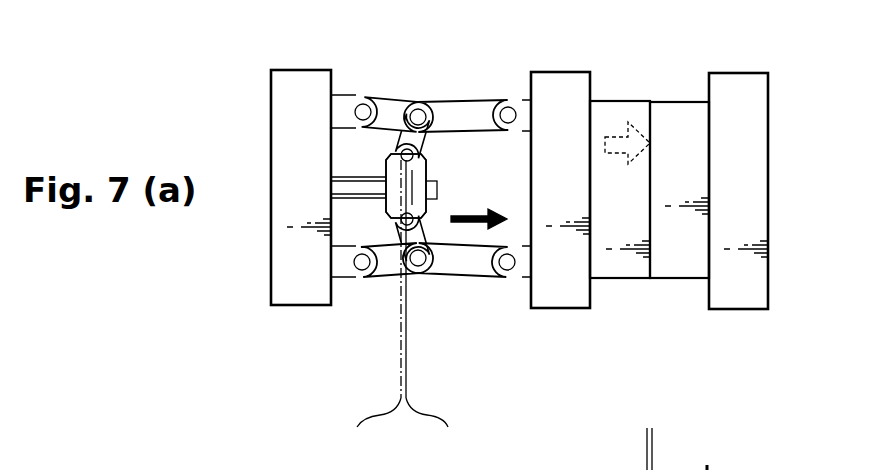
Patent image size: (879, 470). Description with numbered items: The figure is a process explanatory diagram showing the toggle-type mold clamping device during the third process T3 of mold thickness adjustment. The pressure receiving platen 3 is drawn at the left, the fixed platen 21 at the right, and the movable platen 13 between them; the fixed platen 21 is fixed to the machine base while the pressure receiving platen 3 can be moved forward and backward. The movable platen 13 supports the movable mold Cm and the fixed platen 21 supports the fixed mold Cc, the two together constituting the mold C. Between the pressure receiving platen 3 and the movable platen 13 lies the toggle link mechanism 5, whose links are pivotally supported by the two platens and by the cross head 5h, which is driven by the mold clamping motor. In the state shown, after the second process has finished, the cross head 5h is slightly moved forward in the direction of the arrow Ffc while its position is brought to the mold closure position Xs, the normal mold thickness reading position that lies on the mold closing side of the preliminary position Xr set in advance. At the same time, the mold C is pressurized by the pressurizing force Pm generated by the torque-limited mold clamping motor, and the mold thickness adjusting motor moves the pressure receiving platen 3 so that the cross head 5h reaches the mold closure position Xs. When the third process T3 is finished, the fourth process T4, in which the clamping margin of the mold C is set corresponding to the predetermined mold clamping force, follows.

The pressure receiving platen 3 is at (298, 70).
The toggle link mechanism 5 is at (428, 68).
The cross head 5h is at (331, 146).
The movable platen 13 is at (562, 72).
The fixed platen 21 is at (740, 73).
The movable mold Cm is at (621, 101).
The fixed mold Cc is at (682, 102).
The pressurizing force Pm is at (612, 162).
The mold C is at (640, 293).
The arrow direction of cross head forward movement Ffc is at (493, 198).
The third process T3 is at (294, 341).
The fourth process T4 is at (777, 438).
The preliminary position Xr is at (369, 306).
The mold closure position Xs is at (431, 306).